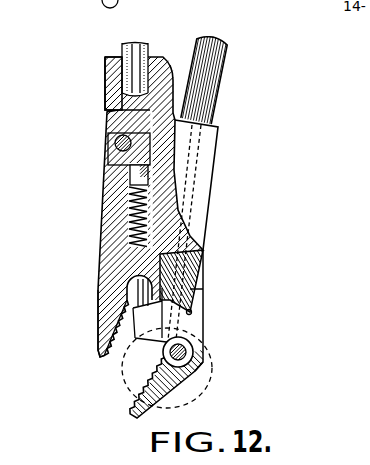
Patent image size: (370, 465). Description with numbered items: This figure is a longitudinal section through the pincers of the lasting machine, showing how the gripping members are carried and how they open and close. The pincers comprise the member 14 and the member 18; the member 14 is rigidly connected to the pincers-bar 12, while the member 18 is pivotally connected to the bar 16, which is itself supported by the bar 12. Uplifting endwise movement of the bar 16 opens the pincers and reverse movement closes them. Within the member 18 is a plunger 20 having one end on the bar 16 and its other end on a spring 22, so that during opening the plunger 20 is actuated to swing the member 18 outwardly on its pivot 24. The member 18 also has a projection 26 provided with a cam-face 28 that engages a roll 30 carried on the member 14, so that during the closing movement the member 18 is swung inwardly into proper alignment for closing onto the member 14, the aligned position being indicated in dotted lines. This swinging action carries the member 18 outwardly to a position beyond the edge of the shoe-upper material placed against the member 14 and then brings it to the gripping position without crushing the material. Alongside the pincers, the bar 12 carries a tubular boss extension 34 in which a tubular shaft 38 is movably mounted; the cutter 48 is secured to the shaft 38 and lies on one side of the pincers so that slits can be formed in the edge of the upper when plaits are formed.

The pincers-bar 12 is at (105, 88).
The pincer member 14 is at (160, 392).
The bar 16 is at (146, 48).
The pincer member 18 is at (105, 250).
The plunger 20 is at (133, 173).
The spring 22 is at (128, 207).
The pivot 24 is at (114, 141).
The projection 26 is at (183, 280).
The cam-face 28 is at (192, 312).
The roll 30 is at (220, 370).
The tubular boss extension 34 is at (211, 161).
The tubular shaft 38 is at (219, 97).
The cutter 48 is at (143, 329).